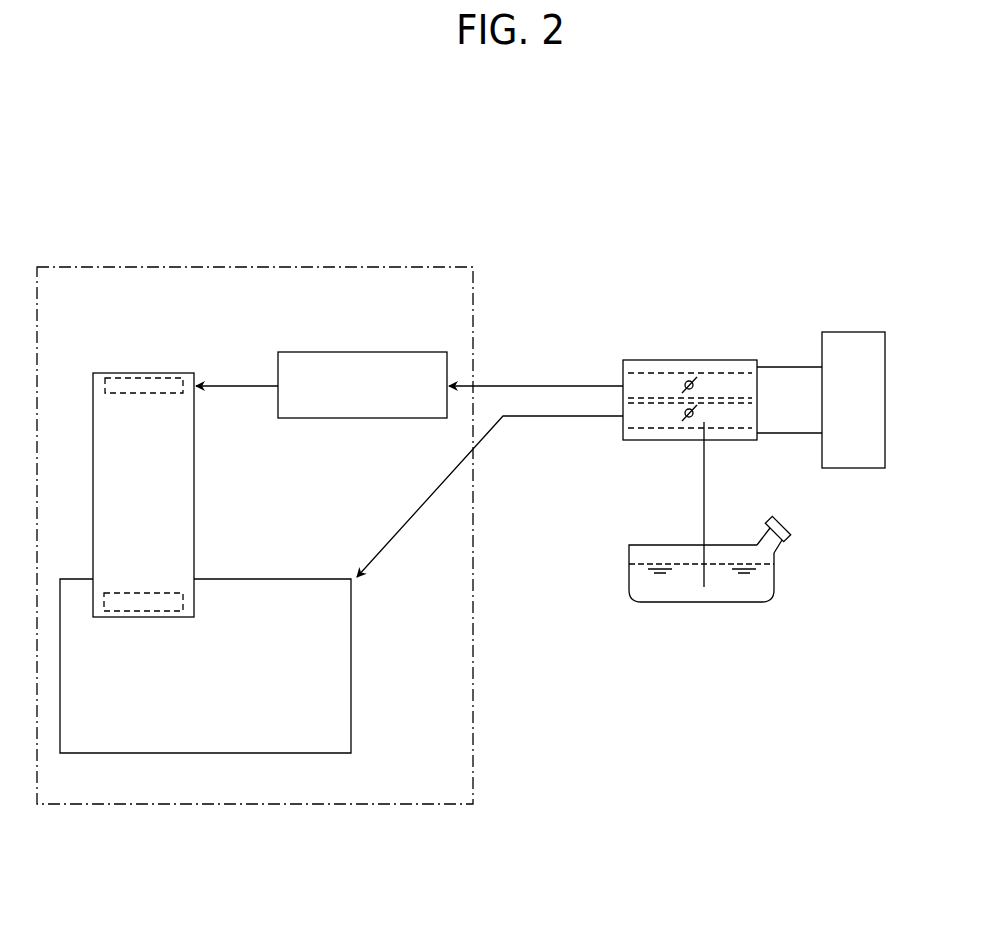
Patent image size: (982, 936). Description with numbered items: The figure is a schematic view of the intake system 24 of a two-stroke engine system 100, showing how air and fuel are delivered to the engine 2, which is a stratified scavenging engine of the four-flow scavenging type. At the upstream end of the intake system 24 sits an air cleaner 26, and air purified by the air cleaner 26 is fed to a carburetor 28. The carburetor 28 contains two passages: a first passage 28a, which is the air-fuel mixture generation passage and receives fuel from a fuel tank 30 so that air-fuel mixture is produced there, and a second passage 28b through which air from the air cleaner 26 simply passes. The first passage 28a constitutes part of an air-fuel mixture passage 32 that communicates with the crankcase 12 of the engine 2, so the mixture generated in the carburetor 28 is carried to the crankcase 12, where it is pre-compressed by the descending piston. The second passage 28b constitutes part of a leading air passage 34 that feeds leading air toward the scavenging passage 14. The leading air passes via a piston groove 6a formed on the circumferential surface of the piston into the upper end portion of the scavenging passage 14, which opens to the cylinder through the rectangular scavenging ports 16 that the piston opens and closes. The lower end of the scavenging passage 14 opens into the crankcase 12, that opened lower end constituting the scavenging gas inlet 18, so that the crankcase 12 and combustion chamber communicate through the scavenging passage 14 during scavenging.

The two-stroke engine system 100 is at (578, 168).
The engine 2 is at (473, 732).
The crankcase 12 is at (353, 657).
The scavenging passage 14 is at (197, 467).
The scavenging ports 16 is at (143, 373).
The scavenging gas inlet 18 is at (152, 592).
The piston groove 6a is at (405, 351).
The leading air passage 34 is at (530, 383).
The air-fuel mixture passage 32 is at (551, 418).
The intake system 24 is at (707, 271).
The carburetor 28 is at (656, 359).
The second passage 28b is at (729, 372).
The first passage 28a is at (724, 428).
The air cleaner 26 is at (864, 331).
The fuel tank 30 is at (738, 605).